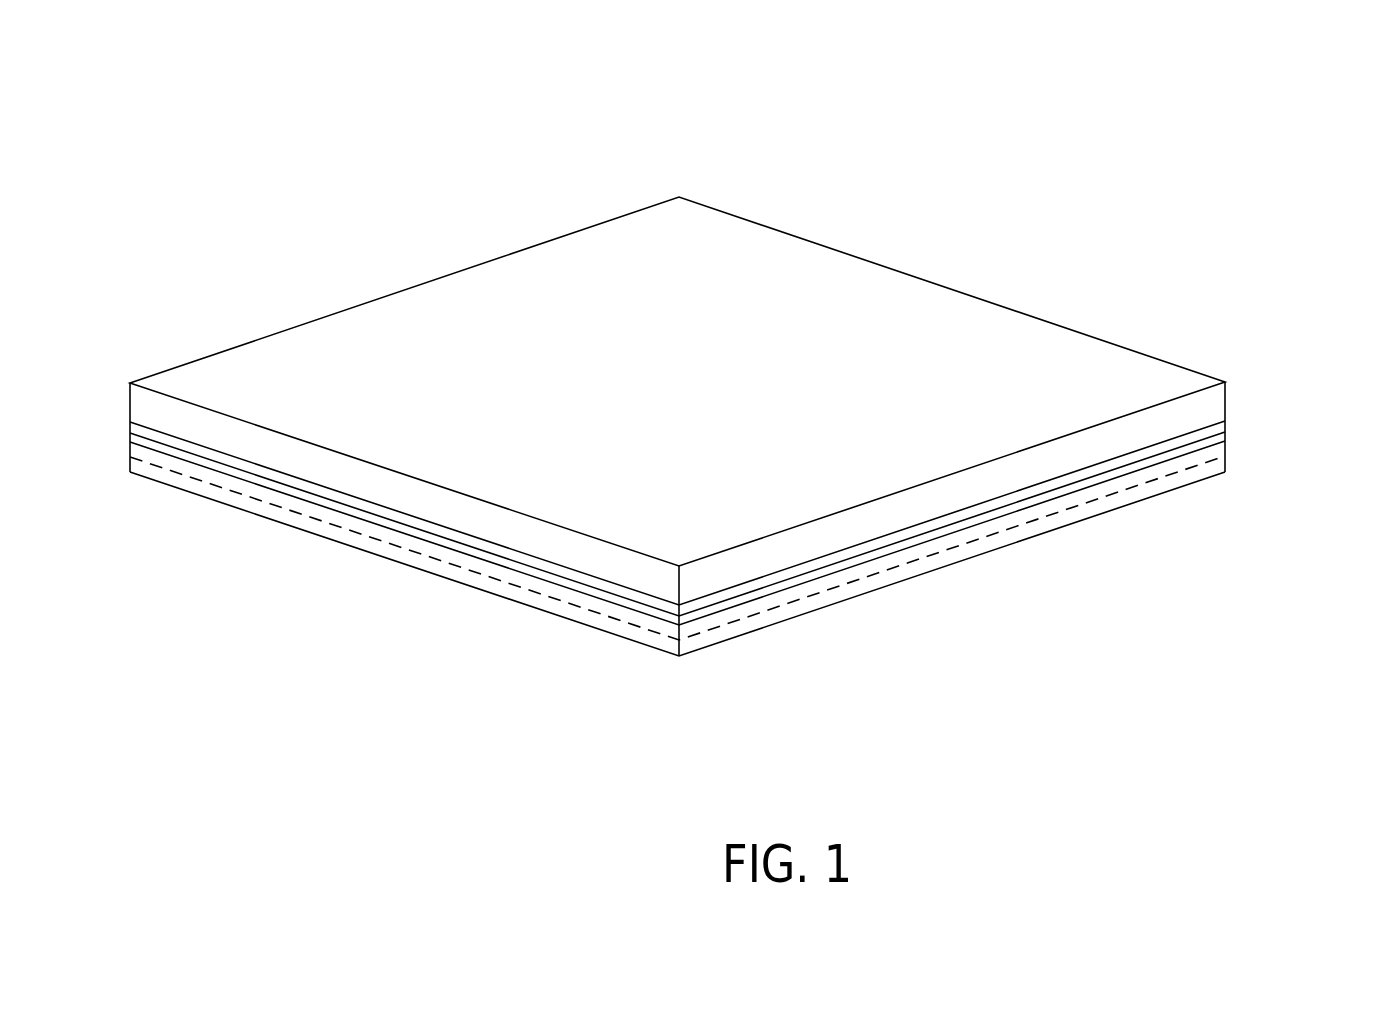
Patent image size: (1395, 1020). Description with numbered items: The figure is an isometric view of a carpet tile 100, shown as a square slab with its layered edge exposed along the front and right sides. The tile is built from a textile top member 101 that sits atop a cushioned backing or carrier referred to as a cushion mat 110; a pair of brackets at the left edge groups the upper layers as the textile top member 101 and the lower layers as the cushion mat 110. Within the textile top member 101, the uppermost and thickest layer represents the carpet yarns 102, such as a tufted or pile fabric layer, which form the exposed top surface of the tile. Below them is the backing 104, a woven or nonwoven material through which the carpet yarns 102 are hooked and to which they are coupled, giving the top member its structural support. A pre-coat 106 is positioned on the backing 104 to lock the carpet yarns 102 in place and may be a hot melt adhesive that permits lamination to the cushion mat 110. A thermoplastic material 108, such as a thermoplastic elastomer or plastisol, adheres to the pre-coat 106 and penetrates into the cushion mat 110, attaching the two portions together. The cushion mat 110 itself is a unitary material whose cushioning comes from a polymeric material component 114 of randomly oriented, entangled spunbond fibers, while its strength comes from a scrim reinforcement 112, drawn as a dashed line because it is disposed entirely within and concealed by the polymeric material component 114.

The carpet tile 100 is at (335, 153).
The textile top member 101 is at (130, 383).
The carpet yarns 102 is at (1228, 393).
The backing 104 is at (1228, 428).
The pre-coat 106 is at (1228, 443).
The thermoplastic material 108 is at (1198, 447).
The cushion mat 110 is at (130, 442).
The scrim reinforcement 112 is at (1133, 488).
The polymeric material component 114 is at (1022, 533).